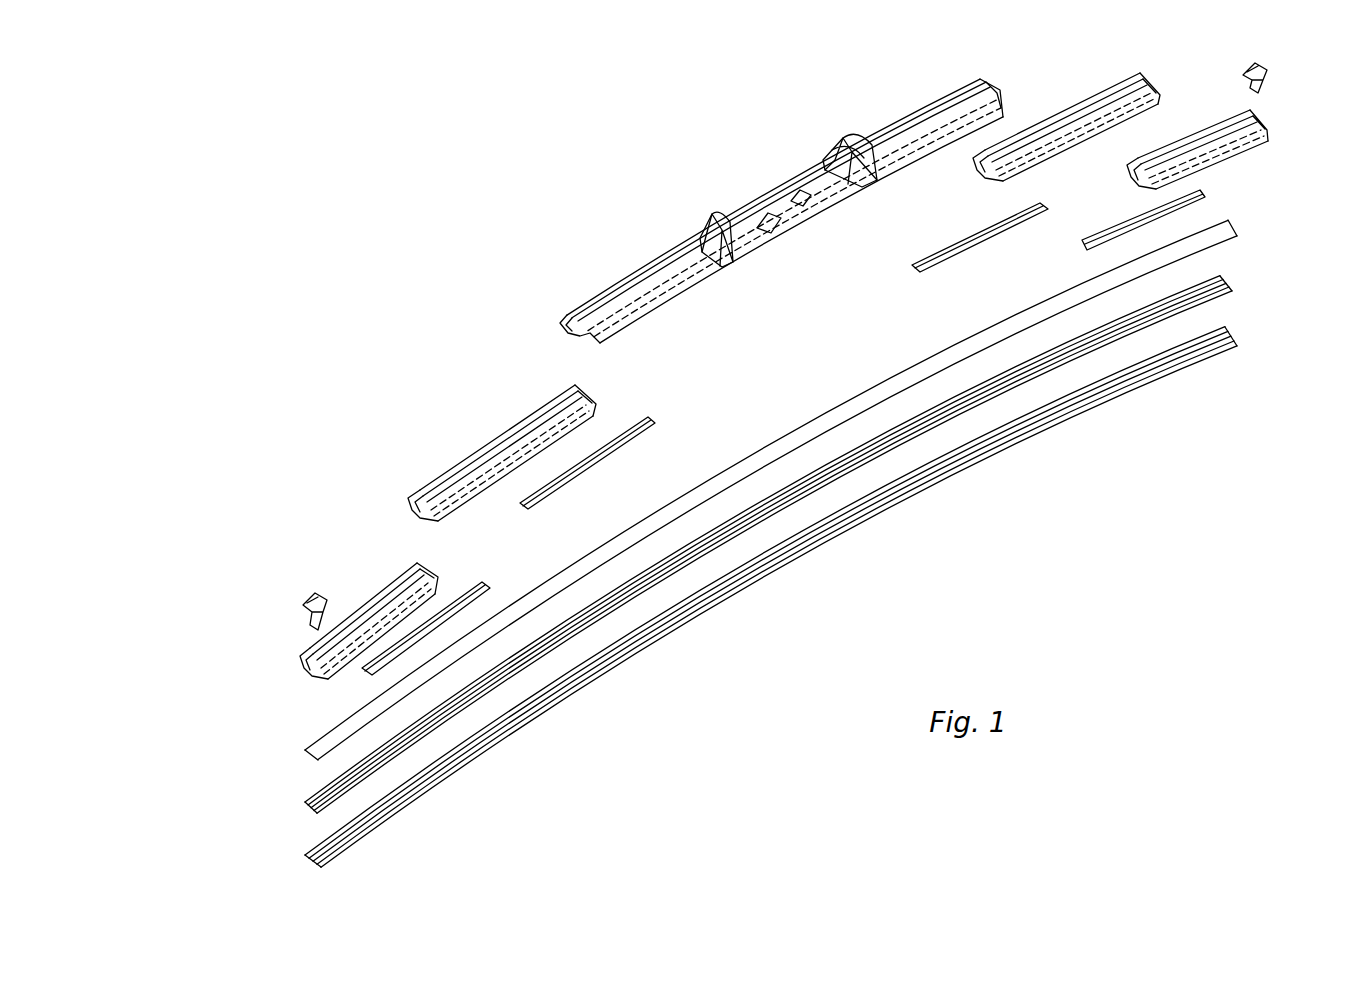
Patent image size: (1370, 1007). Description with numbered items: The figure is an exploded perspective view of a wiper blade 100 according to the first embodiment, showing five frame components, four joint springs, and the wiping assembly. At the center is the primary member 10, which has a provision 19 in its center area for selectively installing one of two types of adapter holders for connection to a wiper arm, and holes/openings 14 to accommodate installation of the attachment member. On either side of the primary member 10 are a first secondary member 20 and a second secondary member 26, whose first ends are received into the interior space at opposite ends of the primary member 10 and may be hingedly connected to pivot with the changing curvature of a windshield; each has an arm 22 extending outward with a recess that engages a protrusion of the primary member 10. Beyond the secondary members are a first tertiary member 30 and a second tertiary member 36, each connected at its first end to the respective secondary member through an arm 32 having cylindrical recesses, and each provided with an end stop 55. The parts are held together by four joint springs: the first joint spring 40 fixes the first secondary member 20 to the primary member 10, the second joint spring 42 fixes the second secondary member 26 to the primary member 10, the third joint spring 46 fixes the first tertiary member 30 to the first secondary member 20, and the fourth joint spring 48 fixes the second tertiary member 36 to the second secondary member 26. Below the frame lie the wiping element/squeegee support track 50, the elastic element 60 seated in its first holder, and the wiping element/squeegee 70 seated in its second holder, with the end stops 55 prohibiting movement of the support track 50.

The wiper blade 100 is at (318, 200).
The primary member 10 is at (650, 262).
The holes/openings 14 is at (755, 210).
The provision 19 is at (807, 174).
The second secondary member 26 is at (1060, 104).
The second tertiary member 36 is at (1200, 124).
The end stop 55 is at (1270, 95).
The first secondary member 20 is at (463, 460).
The arm 22 is at (572, 372).
The first tertiary member 30 is at (370, 593).
The arm 32 is at (423, 562).
The second joint spring 42 is at (975, 245).
The fourth joint spring 48 is at (1143, 223).
The wiping element/squeegee support track 50 is at (305, 752).
The elastic element 60 is at (305, 805).
The wiping element/squeegee 70 is at (305, 868).
The third joint spring 46 is at (440, 613).
The first joint spring 40 is at (593, 466).